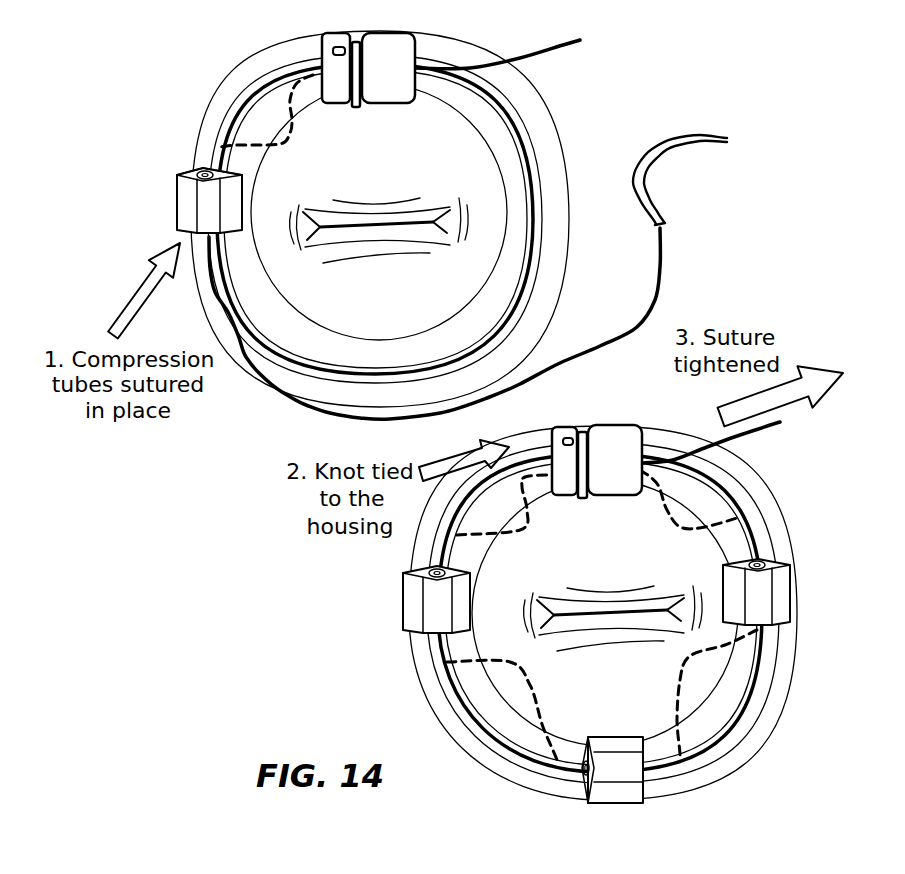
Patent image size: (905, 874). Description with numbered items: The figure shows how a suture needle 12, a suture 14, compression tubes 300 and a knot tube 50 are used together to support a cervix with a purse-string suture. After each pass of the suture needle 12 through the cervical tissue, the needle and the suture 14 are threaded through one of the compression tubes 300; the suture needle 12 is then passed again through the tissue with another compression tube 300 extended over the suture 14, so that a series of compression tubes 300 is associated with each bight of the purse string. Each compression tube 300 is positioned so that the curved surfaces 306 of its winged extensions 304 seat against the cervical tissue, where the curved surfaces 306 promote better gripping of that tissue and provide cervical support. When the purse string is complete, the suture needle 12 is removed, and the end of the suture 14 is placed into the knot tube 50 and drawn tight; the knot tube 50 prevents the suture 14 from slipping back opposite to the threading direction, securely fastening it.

The suture needle 12 is at (682, 146).
The suture 14 is at (663, 267).
The knot tube 50 is at (327, 38).
The compression tube 300 is at (203, 210).
The winged extensions 304 is at (183, 176).
The curved surfaces 306 is at (237, 193).